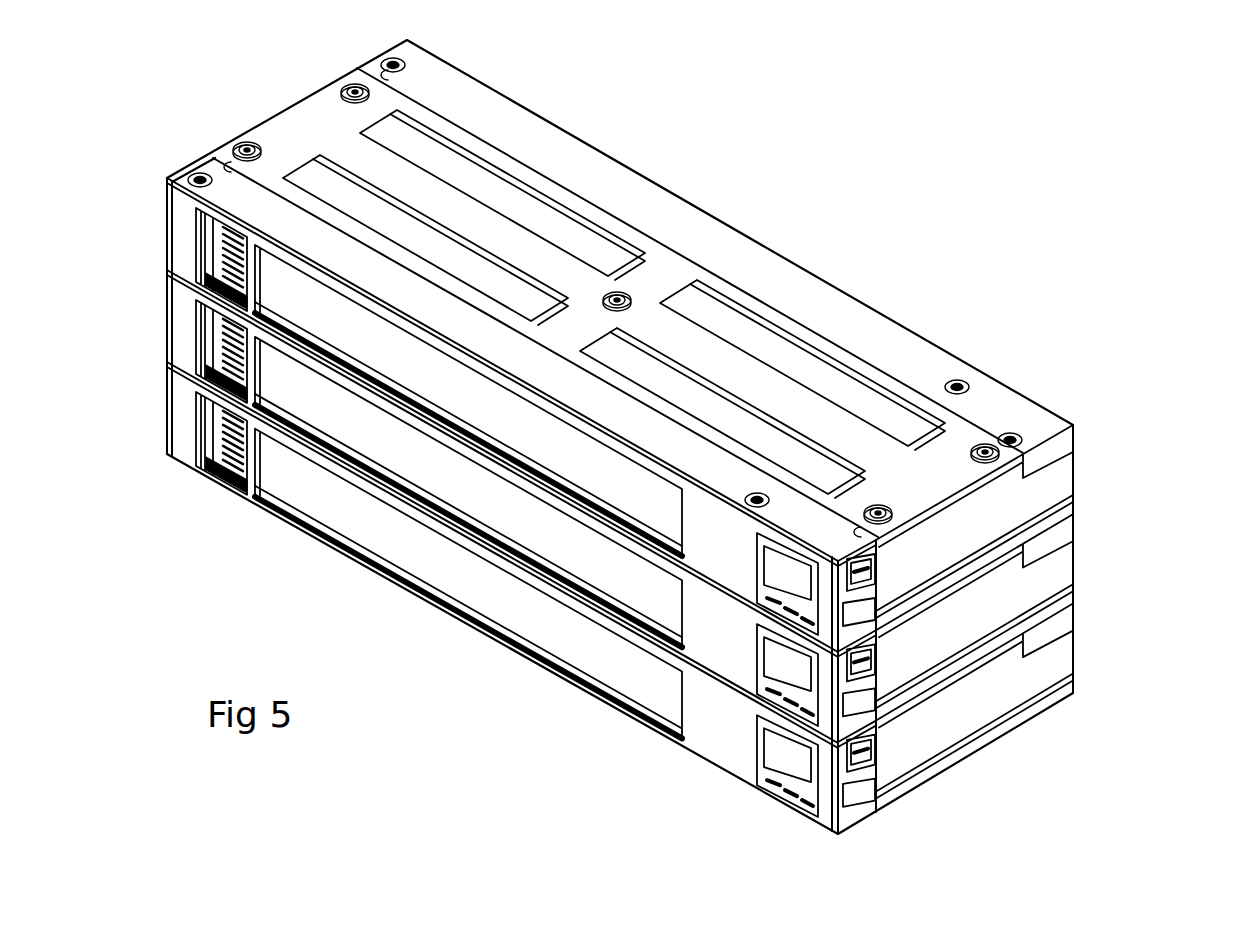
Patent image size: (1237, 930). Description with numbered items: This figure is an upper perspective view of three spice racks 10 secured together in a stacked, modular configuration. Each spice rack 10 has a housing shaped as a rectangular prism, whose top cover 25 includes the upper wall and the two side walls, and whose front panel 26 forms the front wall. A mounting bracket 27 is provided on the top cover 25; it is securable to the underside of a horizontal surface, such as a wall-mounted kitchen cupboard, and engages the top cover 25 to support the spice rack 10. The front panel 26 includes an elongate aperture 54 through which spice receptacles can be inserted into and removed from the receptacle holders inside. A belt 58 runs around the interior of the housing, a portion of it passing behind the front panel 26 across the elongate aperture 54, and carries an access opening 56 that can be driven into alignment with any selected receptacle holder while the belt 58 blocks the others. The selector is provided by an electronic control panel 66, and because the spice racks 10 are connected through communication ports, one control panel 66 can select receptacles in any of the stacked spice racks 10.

The spice rack 10 is at (1102, 498).
The top cover 25 is at (925, 355).
The front panel 26 is at (730, 747).
The mounting bracket 27 is at (305, 120).
The elongate aperture 54 is at (333, 322).
The access opening 56 is at (222, 260).
The belt 58 is at (488, 407).
The control panel 66 is at (792, 770).